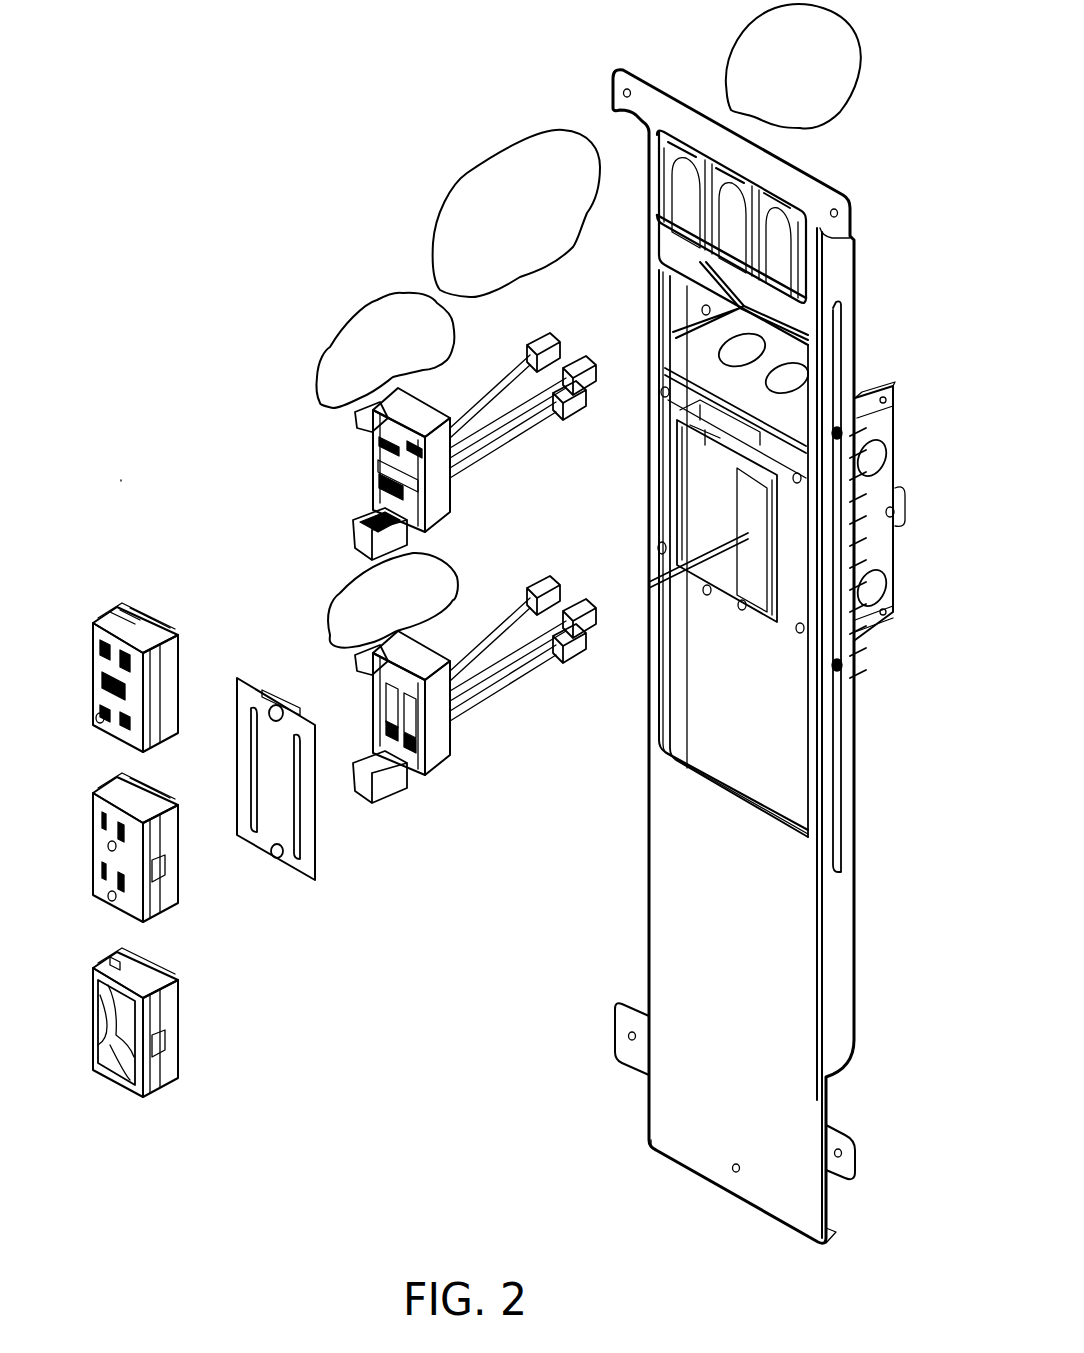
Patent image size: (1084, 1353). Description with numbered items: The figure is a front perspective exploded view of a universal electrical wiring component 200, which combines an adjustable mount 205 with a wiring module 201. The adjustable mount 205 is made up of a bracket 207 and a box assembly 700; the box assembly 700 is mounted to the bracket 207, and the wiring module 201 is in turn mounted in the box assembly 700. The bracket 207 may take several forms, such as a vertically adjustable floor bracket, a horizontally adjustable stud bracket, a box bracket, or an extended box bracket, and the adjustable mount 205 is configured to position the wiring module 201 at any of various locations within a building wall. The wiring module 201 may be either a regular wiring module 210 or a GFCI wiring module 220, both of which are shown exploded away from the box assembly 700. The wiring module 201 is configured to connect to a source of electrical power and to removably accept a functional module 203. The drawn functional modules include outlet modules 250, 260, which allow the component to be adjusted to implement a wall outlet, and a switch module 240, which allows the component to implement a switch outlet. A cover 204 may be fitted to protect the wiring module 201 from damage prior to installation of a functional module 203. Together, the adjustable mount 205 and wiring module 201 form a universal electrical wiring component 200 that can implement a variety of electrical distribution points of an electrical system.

The universal electrical wiring component 200 is at (572, 72).
The wiring module 201 is at (483, 248).
The functional module 203 is at (121, 478).
The cover 204 is at (268, 905).
The adjustable mount 205 is at (753, 116).
The bracket 207 is at (722, 1215).
The regular wiring module 210 is at (377, 632).
The GFCI wiring module 220 is at (373, 393).
The switch module 240 is at (148, 975).
The outlet module 250 is at (150, 795).
The outlet module 260 is at (160, 622).
The box assembly 700 is at (862, 390).